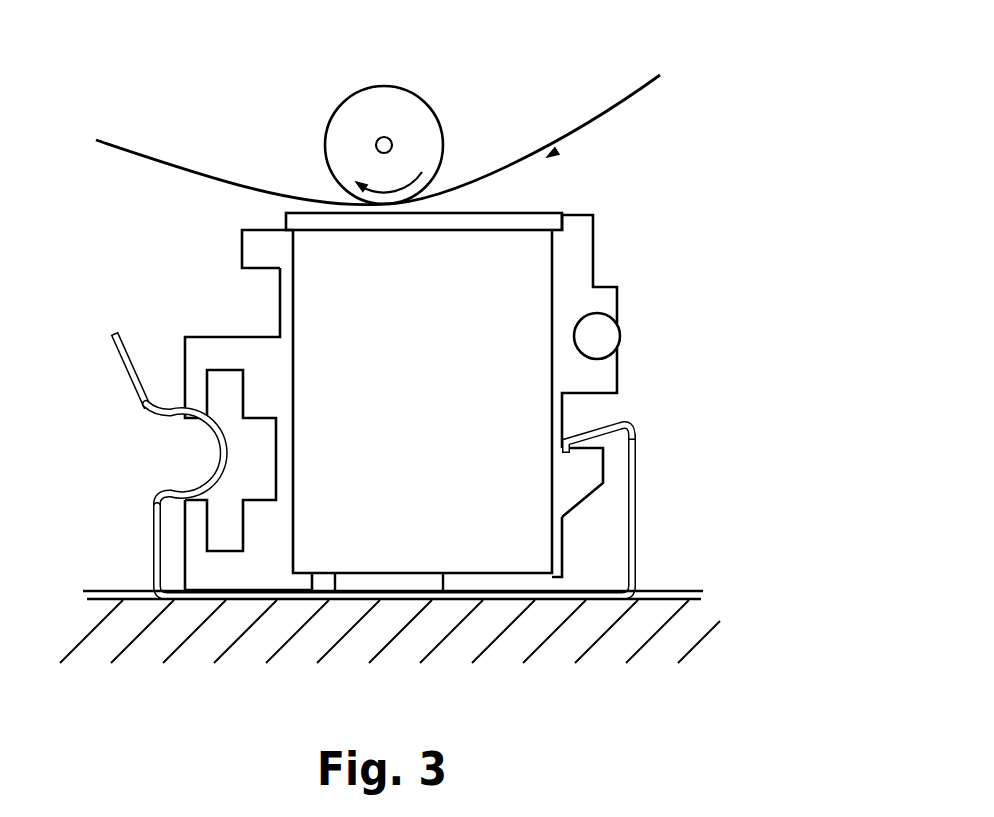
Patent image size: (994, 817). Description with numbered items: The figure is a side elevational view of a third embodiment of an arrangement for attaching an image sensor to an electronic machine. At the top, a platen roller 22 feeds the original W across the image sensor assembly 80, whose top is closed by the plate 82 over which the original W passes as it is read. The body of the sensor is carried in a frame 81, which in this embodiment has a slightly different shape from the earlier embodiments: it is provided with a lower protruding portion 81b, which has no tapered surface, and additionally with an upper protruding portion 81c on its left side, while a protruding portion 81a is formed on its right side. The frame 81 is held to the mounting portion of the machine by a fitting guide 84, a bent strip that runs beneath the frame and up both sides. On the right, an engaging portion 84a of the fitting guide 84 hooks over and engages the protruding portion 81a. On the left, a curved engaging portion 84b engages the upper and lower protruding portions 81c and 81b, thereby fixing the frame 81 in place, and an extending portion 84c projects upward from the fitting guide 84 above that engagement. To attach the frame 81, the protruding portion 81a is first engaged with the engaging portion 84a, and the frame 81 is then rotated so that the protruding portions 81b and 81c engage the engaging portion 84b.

The platen roller 22 is at (381, 90).
The original W is at (515, 166).
The web guide assembly 80 is at (636, 316).
The frame 81 is at (400, 402).
The protruding portion 81a is at (593, 458).
The lower protruding portion 81b is at (193, 508).
The upper protruding portion 81c is at (192, 350).
The guide plate 82 is at (493, 222).
The fitting guide 84 is at (382, 466).
The engaging portion 84a is at (625, 422).
The engaging portion 84b is at (197, 445).
The extending portion 84c is at (120, 364).